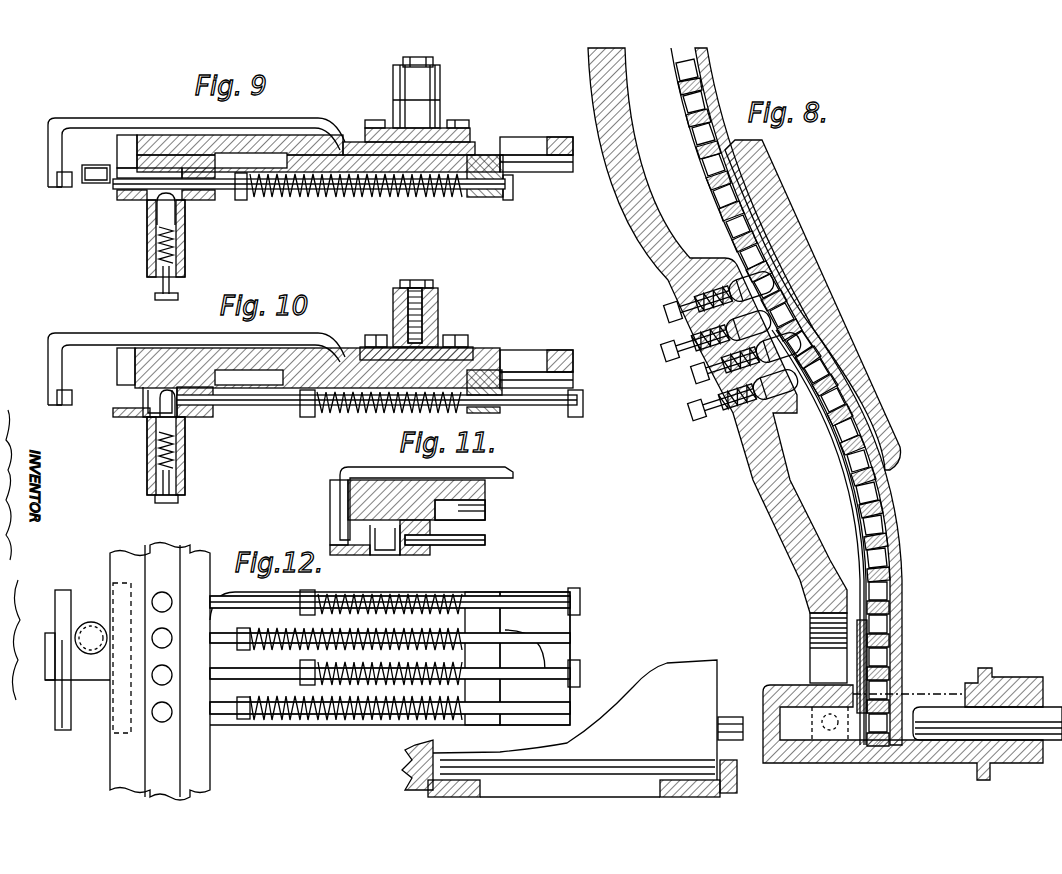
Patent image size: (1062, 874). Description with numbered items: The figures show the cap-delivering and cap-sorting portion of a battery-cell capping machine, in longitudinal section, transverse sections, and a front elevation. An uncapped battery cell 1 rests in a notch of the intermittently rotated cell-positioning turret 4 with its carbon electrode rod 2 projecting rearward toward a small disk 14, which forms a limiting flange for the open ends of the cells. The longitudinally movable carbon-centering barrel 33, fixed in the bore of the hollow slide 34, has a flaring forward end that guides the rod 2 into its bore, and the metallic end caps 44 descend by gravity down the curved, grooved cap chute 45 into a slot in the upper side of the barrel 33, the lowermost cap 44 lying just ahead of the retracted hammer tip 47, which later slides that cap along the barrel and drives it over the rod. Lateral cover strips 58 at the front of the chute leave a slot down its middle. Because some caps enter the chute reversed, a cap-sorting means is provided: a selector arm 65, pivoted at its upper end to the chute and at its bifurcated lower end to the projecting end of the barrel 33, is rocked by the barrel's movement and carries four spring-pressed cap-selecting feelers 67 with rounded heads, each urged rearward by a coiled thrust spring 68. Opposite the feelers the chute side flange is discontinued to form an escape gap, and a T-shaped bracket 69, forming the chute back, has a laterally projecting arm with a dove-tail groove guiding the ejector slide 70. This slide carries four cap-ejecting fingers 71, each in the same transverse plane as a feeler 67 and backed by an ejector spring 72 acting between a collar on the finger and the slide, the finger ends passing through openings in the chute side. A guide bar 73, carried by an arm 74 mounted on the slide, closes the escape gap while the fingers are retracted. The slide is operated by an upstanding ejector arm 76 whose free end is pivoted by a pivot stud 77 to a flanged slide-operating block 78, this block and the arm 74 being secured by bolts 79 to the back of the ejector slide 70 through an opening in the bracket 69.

In FIG. 12, the uncapped battery cells 1 is at (676, 668).
In FIG. 12, the carbon electrode rods 2 is at (730, 716).
In FIG. 12, the cell-positioning turret 4 is at (404, 784).
In FIG. 12, the small disk 14 is at (738, 782).
In FIG. 8, the carbon-centering barrel 33 is at (763, 695).
In FIG. 8, the hollow longitudinally movable slide 34 is at (1020, 677).
In FIG. 9, the metallic end caps 44 is at (95, 165).
In FIG. 10, the metallic end caps 44 is at (143, 400).
In FIG. 11, the metallic end caps 44 is at (400, 538).
In FIG. 12, the metallic end caps 44 is at (91, 622).
In FIG. 8, the metallic end caps 44 is at (708, 150).
In FIG. 8, the cap chute 45 is at (903, 516).
In FIG. 8, the hammer tip 47 is at (937, 707).
In FIG. 9, the lateral cover strips 58 is at (137, 202).
In FIG. 10, the lateral cover strips 58 is at (200, 418).
In FIG. 8, the lateral cover strips 58 is at (858, 492).
In FIG. 9, the selector arm 65 is at (146, 266).
In FIG. 10, the selector arm 65 is at (146, 453).
In FIG. 12, the selector arm 65 is at (165, 768).
In FIG. 8, the selector arm 65 is at (633, 205).
In FIG. 9, the cap-selecting feelers 67 is at (176, 213).
In FIG. 10, the cap-selecting feelers 67 is at (167, 403).
In FIG. 12, the cap-selecting feelers 67 is at (168, 641).
In FIG. 8, the cap-selecting feelers 67 is at (770, 280).
In FIG. 9, the coiled thrust springs 68 is at (185, 241).
In FIG. 10, the coiled thrust springs 68 is at (166, 467).
In FIG. 8, the coiled thrust springs 68 is at (690, 350).
In FIG. 9, the T-shaped bracket 69 is at (555, 137).
In FIG. 10, the T-shaped bracket 69 is at (170, 350).
In FIG. 11, the T-shaped bracket 69 is at (486, 492).
In FIG. 12, the T-shaped bracket 69 is at (551, 592).
In FIG. 8, the T-shaped bracket 69 is at (880, 425).
In FIG. 9, the ejector slide 70 is at (485, 186).
In FIG. 10, the ejector slide 70 is at (485, 370).
In FIG. 12, the ejector slide 70 is at (482, 658).
In FIG. 9, the cap-ejecting fingers 71 is at (118, 192).
In FIG. 10, the cap-ejecting fingers 71 is at (268, 406).
In FIG. 11, the cap-ejecting fingers 71 is at (488, 538).
In FIG. 12, the cap-ejecting fingers 71 is at (222, 602).
In FIG. 9, the ejector springs 72 is at (405, 198).
In FIG. 10, the ejector springs 72 is at (389, 402).
In FIG. 12, the ejector springs 72 is at (270, 640).
In FIG. 9, the guide bar 73 is at (64, 188).
In FIG. 10, the guide bar 73 is at (72, 395).
In FIG. 11, the guide bar 73 is at (345, 532).
In FIG. 12, the guide bar 73 is at (65, 590).
In FIG. 9, the arm 74 is at (150, 124).
In FIG. 10, the arm 74 is at (125, 340).
In FIG. 11, the arm 74 is at (380, 467).
In FIG. 12, the arm 74 is at (98, 680).
In FIG. 9, the ejector arm 76 is at (441, 90).
In FIG. 10, the ejector arm 76 is at (440, 300).
In FIG. 9, the pivot stud 77 is at (428, 58).
In FIG. 10, the pivot stud 77 is at (424, 280).
In FIG. 9, the slide-operating block 78 is at (398, 112).
In FIG. 10, the slide-operating block 78 is at (393, 326).
In FIG. 9, the bolts 79 is at (465, 120).
In FIG. 10, the bolts 79 is at (456, 335).